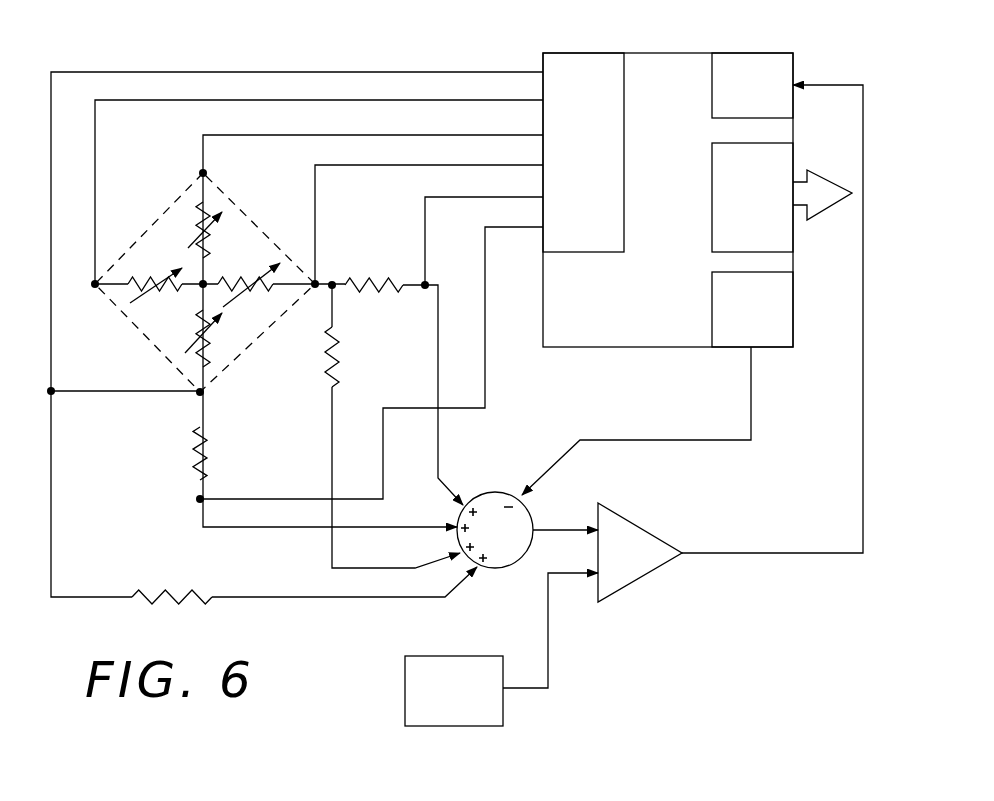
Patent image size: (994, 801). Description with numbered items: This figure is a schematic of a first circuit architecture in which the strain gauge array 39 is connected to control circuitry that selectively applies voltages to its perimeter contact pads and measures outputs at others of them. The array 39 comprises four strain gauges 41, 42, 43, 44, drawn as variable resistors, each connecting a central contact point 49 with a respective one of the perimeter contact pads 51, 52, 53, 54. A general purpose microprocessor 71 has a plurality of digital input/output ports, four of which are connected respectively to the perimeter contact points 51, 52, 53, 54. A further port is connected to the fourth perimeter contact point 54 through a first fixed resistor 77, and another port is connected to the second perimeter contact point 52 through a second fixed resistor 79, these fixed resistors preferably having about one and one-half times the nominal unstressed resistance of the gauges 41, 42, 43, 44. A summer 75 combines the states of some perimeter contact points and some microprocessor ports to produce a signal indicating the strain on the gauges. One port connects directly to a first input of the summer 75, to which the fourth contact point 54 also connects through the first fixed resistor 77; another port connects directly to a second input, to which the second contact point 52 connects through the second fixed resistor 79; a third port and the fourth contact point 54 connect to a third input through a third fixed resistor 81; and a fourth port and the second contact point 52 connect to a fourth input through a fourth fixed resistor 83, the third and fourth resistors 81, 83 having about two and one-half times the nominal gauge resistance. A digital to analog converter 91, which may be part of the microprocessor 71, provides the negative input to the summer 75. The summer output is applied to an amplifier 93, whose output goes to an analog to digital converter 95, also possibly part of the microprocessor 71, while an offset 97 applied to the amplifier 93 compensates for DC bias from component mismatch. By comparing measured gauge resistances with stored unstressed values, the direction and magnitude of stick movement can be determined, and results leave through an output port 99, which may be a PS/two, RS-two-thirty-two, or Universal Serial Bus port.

The strain gauge array 39 is at (171, 205).
The strain gauge 41 is at (198, 226).
The strain gauge 42 is at (196, 322).
The strain gauge 43 is at (154, 277).
The strain gauge 44 is at (272, 280).
The central contact point 49 is at (213, 272).
The perimeter contact pad 51 is at (211, 174).
The perimeter contact pad 52 is at (199, 397).
The perimeter contact pad 53 is at (95, 290).
The perimeter contact pad 54 is at (319, 283).
The microprocessor 71 is at (698, 53).
The summer 75 is at (495, 492).
The first fixed resistor 77 is at (384, 297).
The second fixed resistor 79 is at (205, 446).
The third fixed resistor 81 is at (338, 356).
The fourth fixed resistor 83 is at (156, 593).
The digital to analog converter 91 is at (793, 310).
The amplifier 93 is at (637, 520).
The analog to digital converter 95 is at (793, 65).
The offset 97 is at (440, 726).
The output port 99 is at (820, 213).